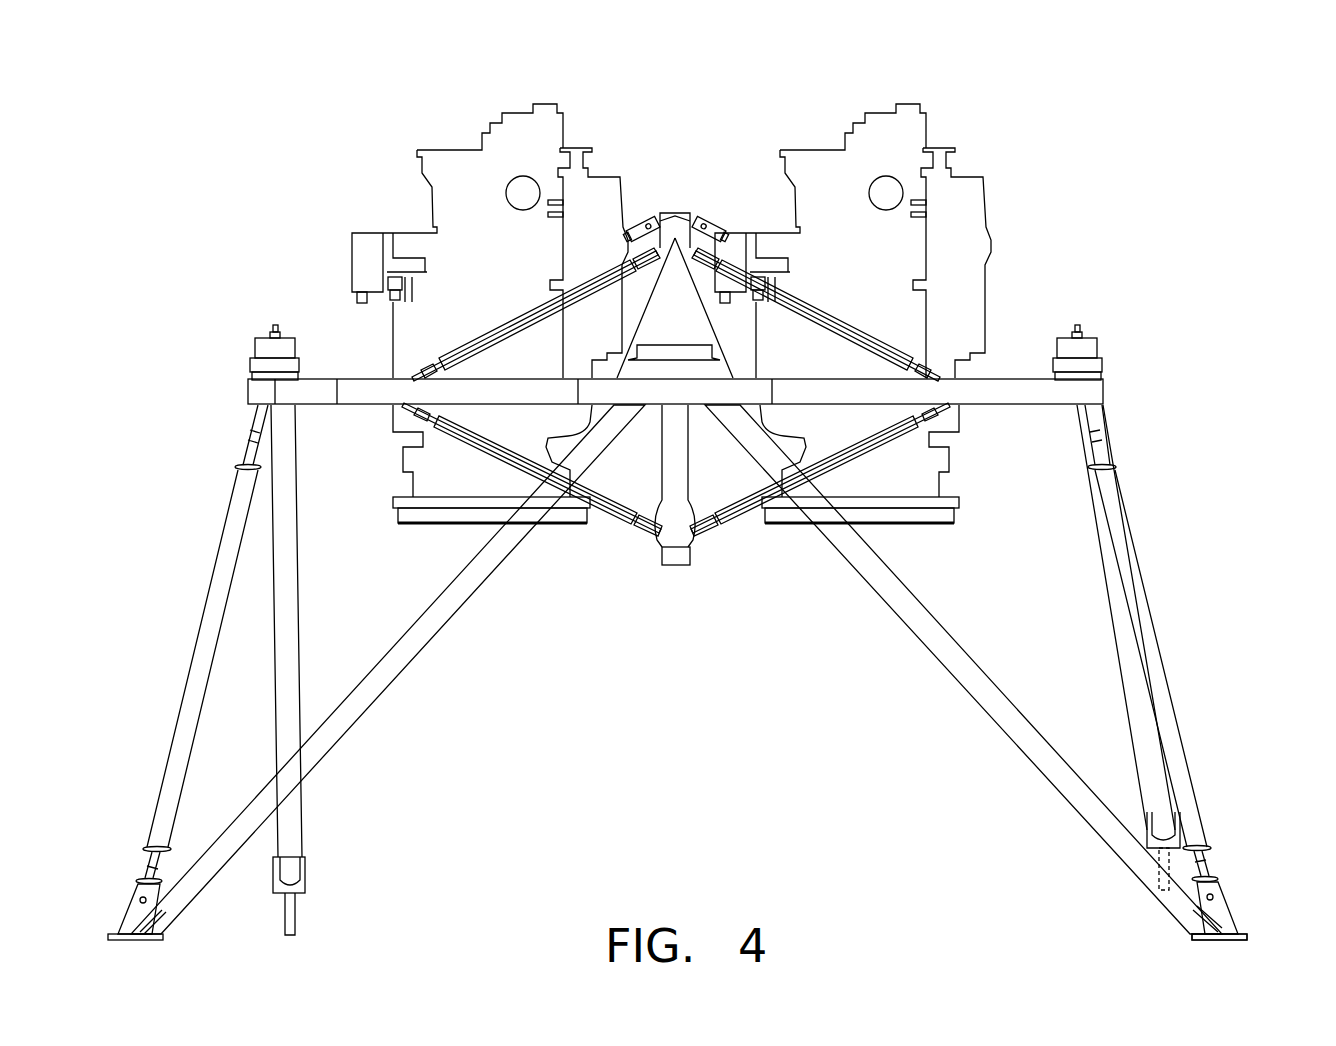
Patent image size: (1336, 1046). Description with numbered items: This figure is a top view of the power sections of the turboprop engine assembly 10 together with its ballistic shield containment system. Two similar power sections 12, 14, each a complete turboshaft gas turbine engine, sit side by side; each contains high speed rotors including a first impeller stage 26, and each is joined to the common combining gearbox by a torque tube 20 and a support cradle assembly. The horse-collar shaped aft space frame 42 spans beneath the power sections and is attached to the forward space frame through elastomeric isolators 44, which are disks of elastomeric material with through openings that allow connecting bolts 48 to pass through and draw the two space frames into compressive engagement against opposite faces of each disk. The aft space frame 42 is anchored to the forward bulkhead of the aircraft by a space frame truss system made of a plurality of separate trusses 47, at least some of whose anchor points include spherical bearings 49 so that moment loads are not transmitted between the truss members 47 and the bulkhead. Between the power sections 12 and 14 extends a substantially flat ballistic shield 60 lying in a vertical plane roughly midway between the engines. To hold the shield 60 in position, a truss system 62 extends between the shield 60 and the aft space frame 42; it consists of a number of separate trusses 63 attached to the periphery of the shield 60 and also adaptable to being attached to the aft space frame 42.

The turboprop engine assembly 10 is at (1040, 143).
The power section 12 is at (910, 235).
The power section 14 is at (443, 176).
The torque tube 20 is at (678, 527).
The first impeller stage 26 is at (260, 338).
The aft space frame 42 is at (372, 400).
The elastomeric isolators 44 is at (265, 352).
The trusses 47 is at (1132, 670).
The connecting bolts 48 is at (276, 325).
The spherical bearings 49 is at (1233, 930).
The ballistic shield 60 is at (673, 460).
The truss system 62 is at (716, 610).
The trusses 63 is at (530, 318).